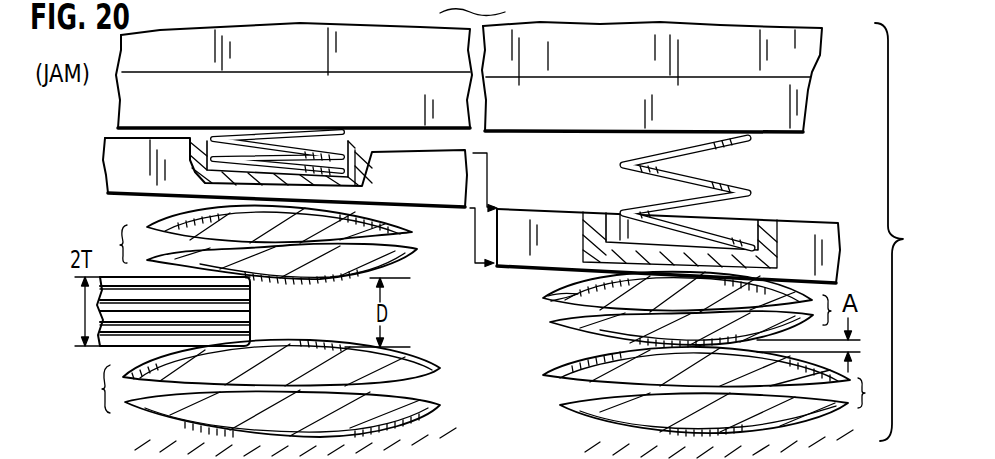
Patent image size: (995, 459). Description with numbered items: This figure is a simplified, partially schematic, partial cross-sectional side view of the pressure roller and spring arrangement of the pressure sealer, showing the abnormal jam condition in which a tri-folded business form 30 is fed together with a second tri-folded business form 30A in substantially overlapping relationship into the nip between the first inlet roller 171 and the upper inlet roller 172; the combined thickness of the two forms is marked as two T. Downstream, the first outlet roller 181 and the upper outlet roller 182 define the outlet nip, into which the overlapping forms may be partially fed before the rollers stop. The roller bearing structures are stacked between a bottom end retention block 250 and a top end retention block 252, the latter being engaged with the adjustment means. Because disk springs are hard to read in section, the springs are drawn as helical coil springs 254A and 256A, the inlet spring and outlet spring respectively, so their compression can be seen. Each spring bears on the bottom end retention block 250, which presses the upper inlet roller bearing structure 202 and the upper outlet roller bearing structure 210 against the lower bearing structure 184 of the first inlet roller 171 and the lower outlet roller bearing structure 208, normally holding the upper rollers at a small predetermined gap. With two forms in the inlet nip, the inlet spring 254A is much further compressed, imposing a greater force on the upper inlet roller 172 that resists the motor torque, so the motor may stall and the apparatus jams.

The top end retention block 252 is at (118, 95).
The bottom end retention block 250 is at (106, 173).
The helical coil spring 254A is at (355, 140).
The helical coil spring 256A is at (736, 146).
The upper inlet roller 172 is at (418, 247).
The upper inlet roller bearing structure 202 is at (407, 262).
The tri-folded business form 30 is at (206, 311).
The second tri-folded business form 30A is at (255, 292).
The bearing structure 184 is at (418, 363).
The first inlet roller 171 is at (410, 377).
The upper outlet roller bearing structure 210 is at (573, 285).
The upper outlet roller 182 is at (577, 297).
The lower outlet roller bearing structure 208 is at (587, 353).
The first outlet roller 181 is at (605, 382).